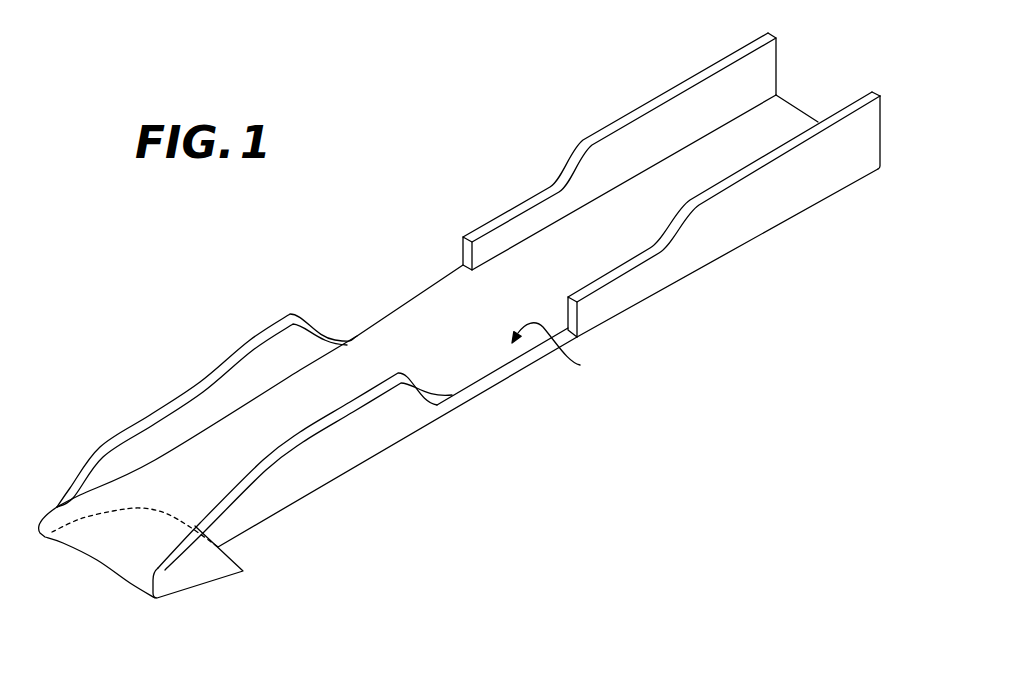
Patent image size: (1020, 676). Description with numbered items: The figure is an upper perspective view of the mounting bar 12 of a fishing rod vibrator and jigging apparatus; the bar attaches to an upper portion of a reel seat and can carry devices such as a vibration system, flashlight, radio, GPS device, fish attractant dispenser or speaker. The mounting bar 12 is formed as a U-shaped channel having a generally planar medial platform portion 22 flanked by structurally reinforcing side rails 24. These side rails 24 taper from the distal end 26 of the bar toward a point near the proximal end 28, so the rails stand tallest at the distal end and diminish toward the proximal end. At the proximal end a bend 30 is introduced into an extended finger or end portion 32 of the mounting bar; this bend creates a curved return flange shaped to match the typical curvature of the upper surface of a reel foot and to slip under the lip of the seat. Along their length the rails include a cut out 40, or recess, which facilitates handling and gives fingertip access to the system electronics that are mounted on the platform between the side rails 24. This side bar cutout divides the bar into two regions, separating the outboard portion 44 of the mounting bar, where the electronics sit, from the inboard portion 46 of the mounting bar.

The mounting bar 12 is at (142, 366).
The medial platform portion 22 is at (421, 310).
The side rails 24 is at (675, 92).
The distal end 26 is at (882, 150).
The proximal end 28 is at (78, 487).
The bend 30 is at (133, 552).
The end portion 32 is at (200, 578).
The cut out 40 is at (565, 351).
The outboard portion 44 is at (758, 222).
The inboard portion 46 is at (357, 455).